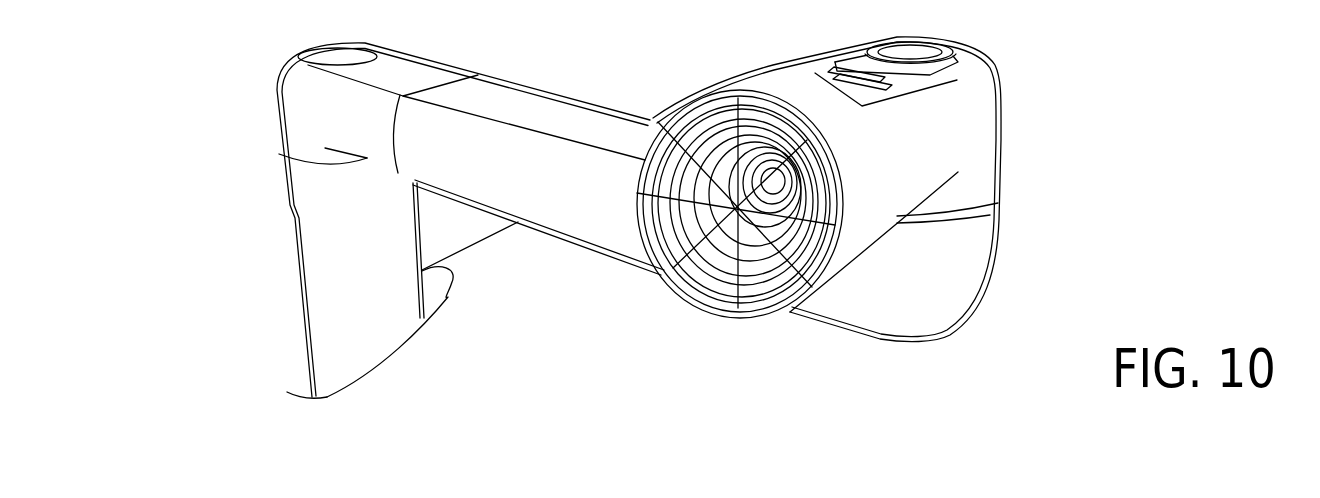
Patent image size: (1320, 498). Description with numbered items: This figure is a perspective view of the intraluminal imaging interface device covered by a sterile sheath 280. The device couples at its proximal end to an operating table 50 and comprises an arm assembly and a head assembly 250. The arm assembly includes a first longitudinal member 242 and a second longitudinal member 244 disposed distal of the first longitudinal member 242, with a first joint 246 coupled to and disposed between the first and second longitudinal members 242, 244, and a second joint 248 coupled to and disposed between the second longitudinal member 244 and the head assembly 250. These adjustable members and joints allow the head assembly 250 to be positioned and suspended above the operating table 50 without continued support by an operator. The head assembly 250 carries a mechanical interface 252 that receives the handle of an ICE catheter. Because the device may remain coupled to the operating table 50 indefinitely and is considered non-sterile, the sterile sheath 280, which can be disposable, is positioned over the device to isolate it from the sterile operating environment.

The operating table 50 is at (508, 328).
The first longitudinal member 242 is at (335, 225).
The second longitudinal member 244 is at (538, 97).
The first joint 246 is at (287, 157).
The second joint 248 is at (983, 210).
The head assembly 250 is at (1022, 119).
The mechanical interface 252 is at (678, 252).
The sterile sheath 280 is at (277, 113).